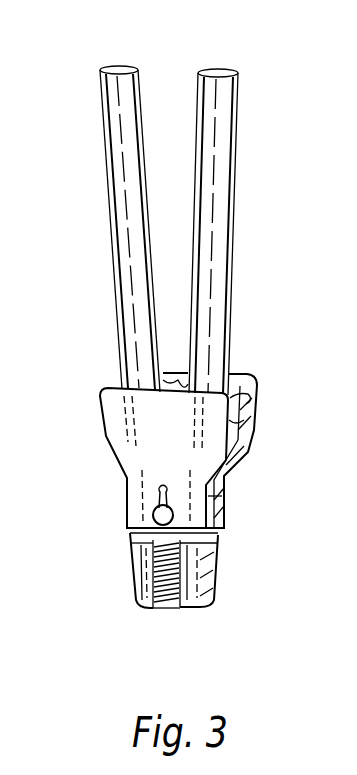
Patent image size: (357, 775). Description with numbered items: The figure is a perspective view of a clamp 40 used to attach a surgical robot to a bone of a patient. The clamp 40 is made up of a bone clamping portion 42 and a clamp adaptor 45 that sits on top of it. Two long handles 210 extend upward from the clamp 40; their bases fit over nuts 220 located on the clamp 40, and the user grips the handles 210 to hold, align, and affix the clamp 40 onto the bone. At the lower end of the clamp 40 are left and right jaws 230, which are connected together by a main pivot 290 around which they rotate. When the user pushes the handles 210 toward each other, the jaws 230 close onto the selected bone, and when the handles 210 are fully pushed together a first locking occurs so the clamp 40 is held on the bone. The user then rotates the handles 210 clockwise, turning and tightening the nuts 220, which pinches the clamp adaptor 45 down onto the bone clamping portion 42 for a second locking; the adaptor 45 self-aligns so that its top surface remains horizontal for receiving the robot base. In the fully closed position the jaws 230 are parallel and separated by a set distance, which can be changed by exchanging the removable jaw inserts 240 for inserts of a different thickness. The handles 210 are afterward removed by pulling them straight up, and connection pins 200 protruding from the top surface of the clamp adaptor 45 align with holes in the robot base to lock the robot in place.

The clamp 40 is at (98, 470).
The bone clamping portion 42 is at (236, 514).
The clamp adaptor 45 is at (225, 430).
The connection pins 200 is at (118, 376).
The handles 210 is at (115, 65).
The nuts 220 is at (233, 392).
The jaws 230 is at (132, 562).
The jaw inserts 240 is at (187, 610).
The main pivot 290 is at (132, 524).